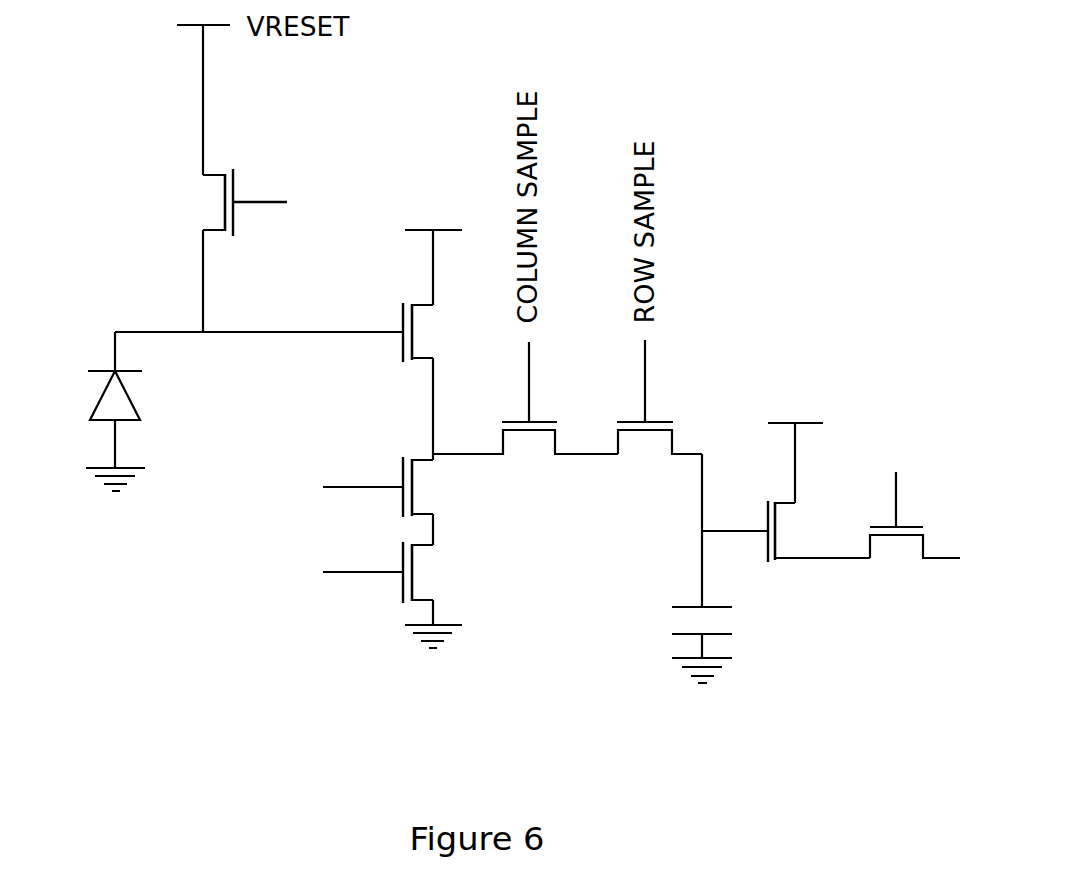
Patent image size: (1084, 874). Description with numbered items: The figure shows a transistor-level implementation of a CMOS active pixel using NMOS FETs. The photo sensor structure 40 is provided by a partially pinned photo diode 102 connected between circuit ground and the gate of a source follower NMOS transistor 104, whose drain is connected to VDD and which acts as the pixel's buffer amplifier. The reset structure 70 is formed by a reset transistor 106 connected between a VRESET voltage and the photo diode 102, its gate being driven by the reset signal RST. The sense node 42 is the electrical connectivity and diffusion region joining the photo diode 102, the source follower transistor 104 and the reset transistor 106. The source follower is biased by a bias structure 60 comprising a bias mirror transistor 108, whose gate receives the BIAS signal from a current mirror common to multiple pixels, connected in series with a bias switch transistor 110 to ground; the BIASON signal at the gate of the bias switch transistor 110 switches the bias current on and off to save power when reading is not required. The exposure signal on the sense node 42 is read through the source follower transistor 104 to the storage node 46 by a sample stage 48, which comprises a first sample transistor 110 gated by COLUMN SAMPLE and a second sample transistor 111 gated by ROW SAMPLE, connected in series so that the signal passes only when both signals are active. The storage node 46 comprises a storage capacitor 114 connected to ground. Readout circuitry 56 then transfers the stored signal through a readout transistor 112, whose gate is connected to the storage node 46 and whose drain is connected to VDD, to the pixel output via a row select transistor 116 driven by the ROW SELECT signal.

The photo sensor structure 40 is at (132, 409).
The sense node 42 is at (332, 342).
The storage node 46 is at (653, 583).
The sample stage 48 is at (608, 435).
The readout circuitry 56 is at (831, 547).
The bias structure 60 is at (412, 503).
The reset structure 70 is at (240, 221).
The partially pinned photo diode 102 is at (102, 407).
The source follower NMOS transistor 104 is at (397, 358).
The reset transistor 106 is at (230, 170).
The bias mirror transistor 108 is at (395, 602).
The bias switch transistor 110 is at (397, 462).
The second sample NMOS transistor 111 is at (670, 397).
The readout transistor 112 is at (772, 562).
The storage capacitor 114 is at (638, 513).
The row select transistor 116 is at (904, 520).